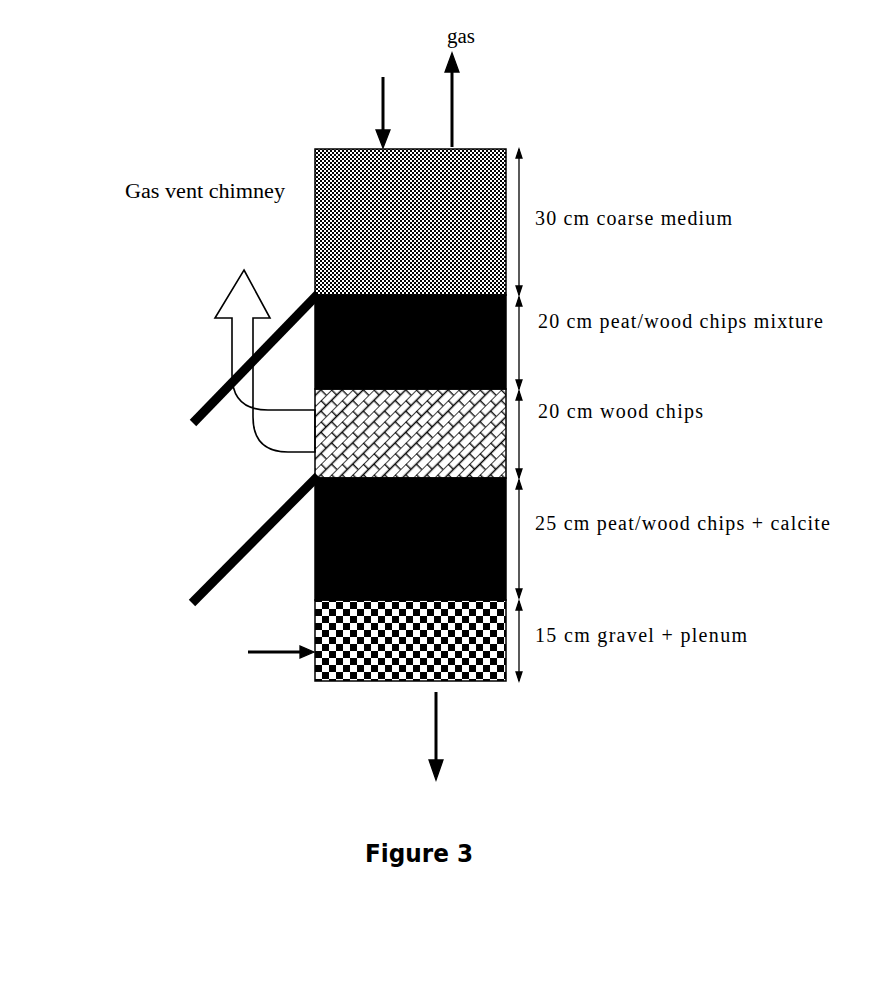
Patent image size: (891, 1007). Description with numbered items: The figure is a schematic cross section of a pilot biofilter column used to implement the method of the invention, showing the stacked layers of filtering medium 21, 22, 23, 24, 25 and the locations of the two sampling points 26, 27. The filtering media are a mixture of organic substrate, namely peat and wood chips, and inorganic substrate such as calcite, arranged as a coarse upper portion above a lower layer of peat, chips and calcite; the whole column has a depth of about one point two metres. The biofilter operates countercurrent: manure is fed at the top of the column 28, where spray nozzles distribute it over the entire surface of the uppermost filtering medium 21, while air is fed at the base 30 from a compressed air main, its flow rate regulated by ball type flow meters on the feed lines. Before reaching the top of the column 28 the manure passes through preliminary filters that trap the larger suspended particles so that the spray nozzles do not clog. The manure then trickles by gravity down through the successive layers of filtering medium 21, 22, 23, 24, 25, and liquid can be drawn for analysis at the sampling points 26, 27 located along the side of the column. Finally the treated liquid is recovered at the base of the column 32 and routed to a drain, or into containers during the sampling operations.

The filtering medium layer 21 is at (410, 222).
The filtering medium layer 22 is at (410, 342).
The filtering medium layer 23 is at (410, 433).
The filtering medium layer 24 is at (410, 539).
The filtering medium layer 25 is at (410, 640).
The sampling point 26 is at (285, 347).
The sampling point 27 is at (284, 531).
The top of the column 28 is at (388, 86).
The base of the column 30 is at (260, 659).
The base of the column 32 is at (518, 746).